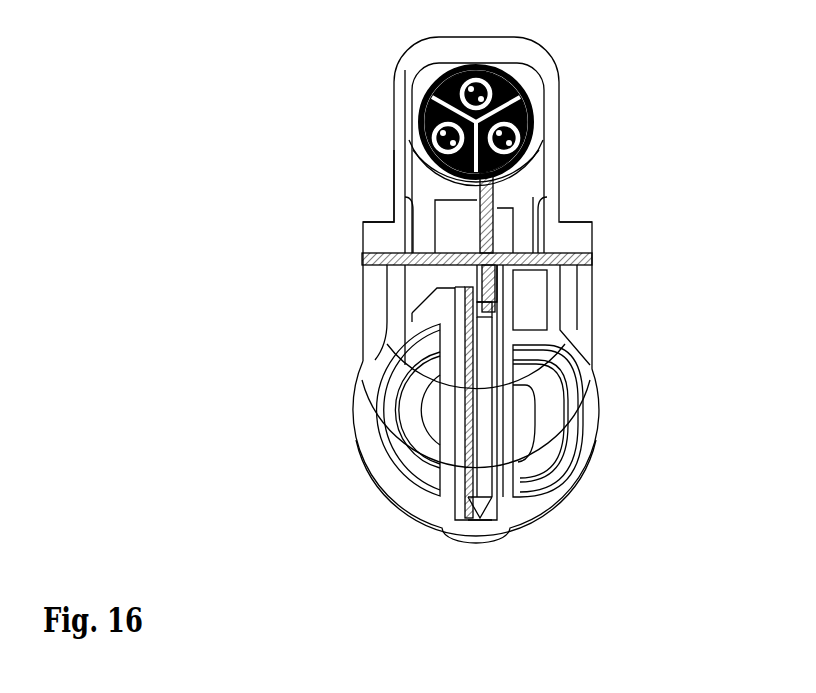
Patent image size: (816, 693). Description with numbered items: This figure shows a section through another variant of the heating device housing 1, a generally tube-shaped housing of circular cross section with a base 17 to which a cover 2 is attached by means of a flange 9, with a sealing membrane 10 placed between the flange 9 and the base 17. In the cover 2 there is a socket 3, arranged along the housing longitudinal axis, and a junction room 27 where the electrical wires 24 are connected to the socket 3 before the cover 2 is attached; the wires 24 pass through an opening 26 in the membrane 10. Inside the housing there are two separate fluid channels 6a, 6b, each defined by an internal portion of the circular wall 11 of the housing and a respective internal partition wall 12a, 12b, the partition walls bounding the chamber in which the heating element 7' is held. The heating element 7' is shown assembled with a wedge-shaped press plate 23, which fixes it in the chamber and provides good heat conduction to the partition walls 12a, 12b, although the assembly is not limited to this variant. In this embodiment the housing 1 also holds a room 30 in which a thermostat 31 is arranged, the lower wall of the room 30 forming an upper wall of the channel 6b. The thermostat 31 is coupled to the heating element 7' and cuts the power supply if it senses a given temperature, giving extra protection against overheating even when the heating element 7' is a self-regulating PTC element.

The housing 1 is at (514, 290).
The cover 2 is at (551, 69).
The socket 3 is at (538, 126).
The fluid channel 6a is at (345, 410).
The fluid channel 6b is at (581, 425).
The heating element 7' is at (387, 418).
The flange 9 is at (445, 186).
The sealing membrane 10 is at (418, 243).
The wall 11 is at (452, 488).
The internal partition wall 12a is at (340, 415).
The internal partition wall 12b is at (603, 420).
The base 17 is at (346, 313).
The press plate 23 is at (370, 392).
The electrical wires 24 is at (565, 240).
The opening 26 is at (564, 261).
The junction room 27 is at (440, 201).
The room 30 is at (590, 374).
The thermostat 31 is at (596, 300).